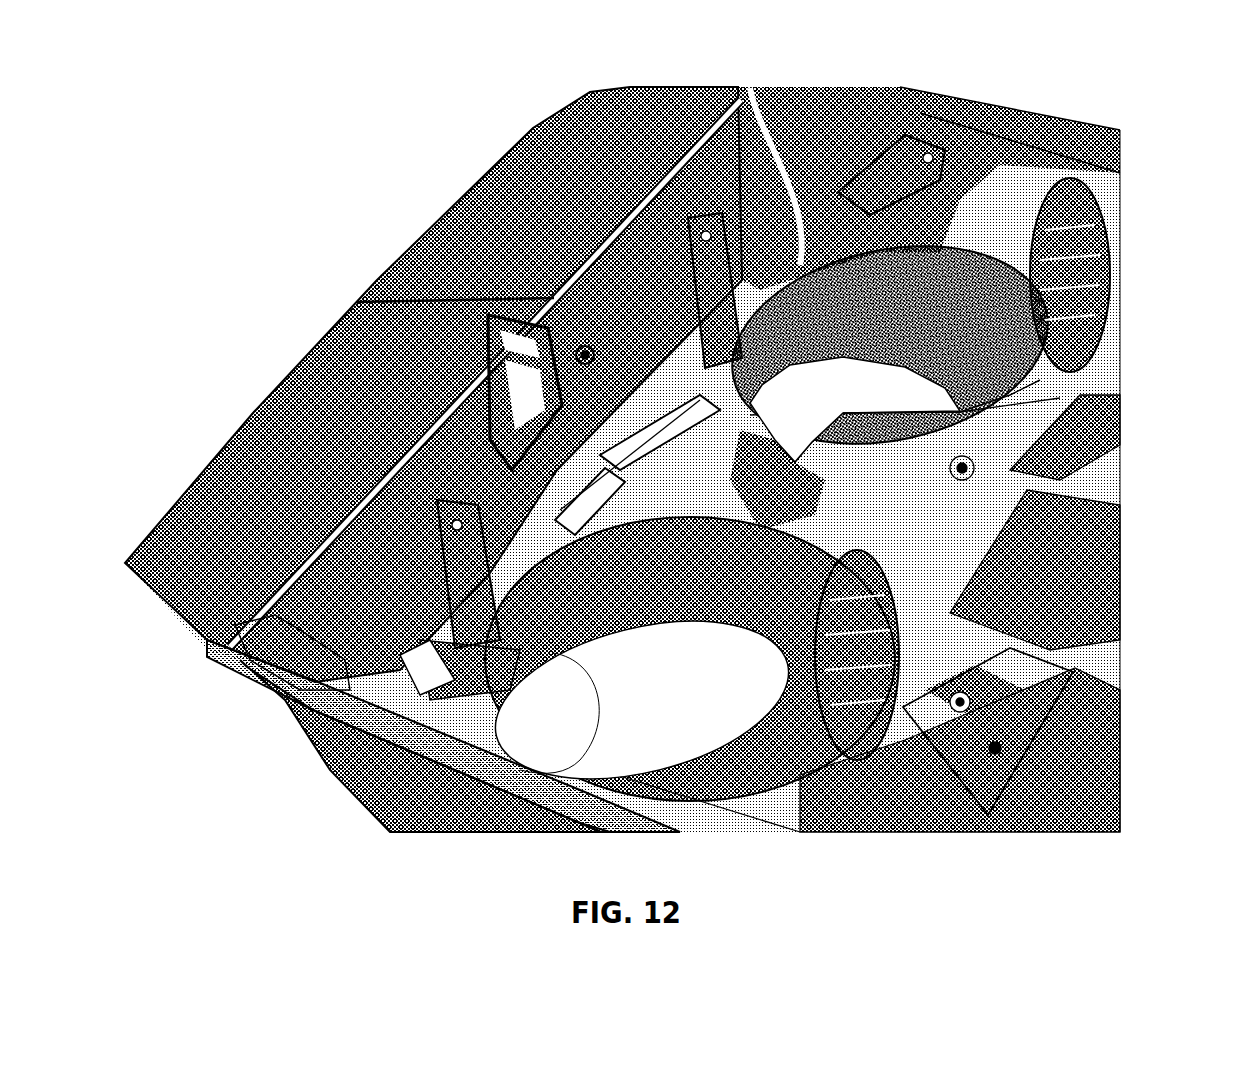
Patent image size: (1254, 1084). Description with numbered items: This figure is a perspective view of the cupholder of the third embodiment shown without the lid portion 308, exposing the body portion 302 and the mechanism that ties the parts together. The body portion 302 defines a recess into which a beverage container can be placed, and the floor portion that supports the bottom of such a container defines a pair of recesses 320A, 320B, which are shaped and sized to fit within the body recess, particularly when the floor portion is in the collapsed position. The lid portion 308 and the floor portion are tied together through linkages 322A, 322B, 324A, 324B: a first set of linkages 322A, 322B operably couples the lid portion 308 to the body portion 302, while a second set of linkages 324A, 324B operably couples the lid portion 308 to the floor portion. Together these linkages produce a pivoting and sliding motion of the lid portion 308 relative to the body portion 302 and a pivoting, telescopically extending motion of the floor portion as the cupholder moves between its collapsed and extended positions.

The body portion 302 is at (1100, 378).
The lid portion 308 is at (582, 112).
The recess 320A is at (545, 830).
The recess 320B is at (985, 278).
The linkage 322A is at (390, 788).
The linkage 322B is at (925, 150).
The linkage 324A is at (332, 685).
The linkage 324B is at (748, 213).